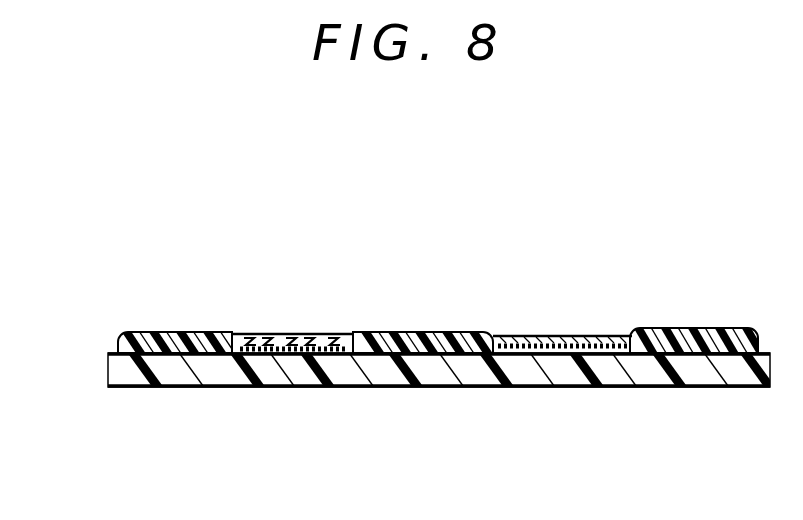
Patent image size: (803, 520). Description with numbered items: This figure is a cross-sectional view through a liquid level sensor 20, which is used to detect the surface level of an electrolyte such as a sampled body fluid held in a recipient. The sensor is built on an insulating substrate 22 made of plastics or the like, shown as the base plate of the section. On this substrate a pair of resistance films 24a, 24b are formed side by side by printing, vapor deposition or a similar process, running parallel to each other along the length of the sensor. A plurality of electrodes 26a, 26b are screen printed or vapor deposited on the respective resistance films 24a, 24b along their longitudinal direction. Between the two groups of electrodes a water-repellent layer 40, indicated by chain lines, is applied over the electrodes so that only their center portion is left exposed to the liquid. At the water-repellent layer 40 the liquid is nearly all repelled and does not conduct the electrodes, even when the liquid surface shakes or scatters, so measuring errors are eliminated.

The liquid level sensor 20 is at (409, 306).
The insulating substrate 22 is at (707, 370).
The resistance film 24a is at (288, 352).
The resistance film 24b is at (566, 352).
The electrodes 26a is at (226, 332).
The electrodes 26b is at (623, 334).
The water-repellent layer 40 is at (473, 331).